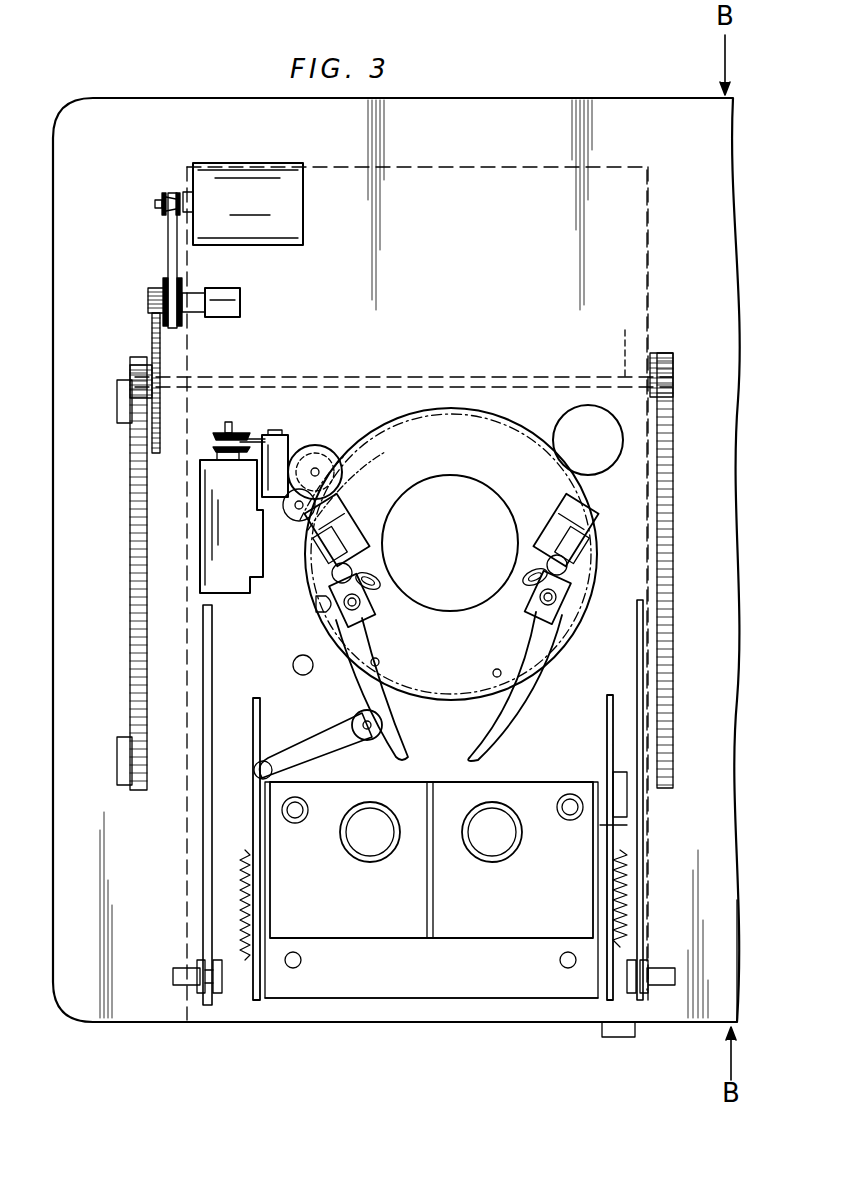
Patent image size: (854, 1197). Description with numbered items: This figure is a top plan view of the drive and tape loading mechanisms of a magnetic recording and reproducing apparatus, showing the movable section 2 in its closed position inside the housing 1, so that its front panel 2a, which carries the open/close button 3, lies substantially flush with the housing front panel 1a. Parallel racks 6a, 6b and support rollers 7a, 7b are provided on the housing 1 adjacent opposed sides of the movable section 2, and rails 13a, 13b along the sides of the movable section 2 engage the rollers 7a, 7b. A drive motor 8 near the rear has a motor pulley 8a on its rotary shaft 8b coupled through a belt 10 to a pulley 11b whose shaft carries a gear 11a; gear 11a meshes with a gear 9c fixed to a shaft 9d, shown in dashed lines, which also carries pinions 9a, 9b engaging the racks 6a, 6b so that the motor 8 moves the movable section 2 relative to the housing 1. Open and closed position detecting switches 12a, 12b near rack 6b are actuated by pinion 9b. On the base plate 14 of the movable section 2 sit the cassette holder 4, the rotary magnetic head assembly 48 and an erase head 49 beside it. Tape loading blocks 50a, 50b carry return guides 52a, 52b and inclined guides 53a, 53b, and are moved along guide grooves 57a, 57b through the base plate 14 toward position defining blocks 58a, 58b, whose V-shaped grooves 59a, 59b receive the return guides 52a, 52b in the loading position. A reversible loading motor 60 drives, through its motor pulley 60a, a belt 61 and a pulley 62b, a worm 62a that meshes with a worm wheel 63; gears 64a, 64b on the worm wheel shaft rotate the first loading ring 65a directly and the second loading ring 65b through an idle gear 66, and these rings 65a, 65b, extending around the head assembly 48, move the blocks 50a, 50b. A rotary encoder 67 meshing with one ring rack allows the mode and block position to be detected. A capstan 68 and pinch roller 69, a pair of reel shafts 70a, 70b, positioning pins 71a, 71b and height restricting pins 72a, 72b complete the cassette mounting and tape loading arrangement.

The housing 1 is at (138, 1025).
The front panel 1a is at (700, 1025).
The movable section 2 is at (355, 1015).
The front panel 2a is at (485, 1025).
The open/close button 3 is at (620, 1037).
The cassette holder 4 is at (433, 940).
The rack 6a is at (675, 608).
The rack 6b is at (128, 540).
The roller 7a is at (660, 968).
The roller 7b is at (185, 963).
The drive motor 8 is at (272, 165).
The motor pulley 8a is at (160, 203).
The rotary shaft 8b is at (153, 204).
The pinion 9a is at (675, 368).
The pinion 9b is at (128, 372).
The gear 9c is at (150, 337).
The shaft 9d is at (625, 330).
The belt 10 is at (167, 248).
The gear 11a is at (146, 303).
The pulley 11b is at (162, 290).
The open position detecting switch 12a is at (115, 760).
The closed position detecting switch 12b is at (115, 410).
The rail 13a is at (645, 815).
The rail 13b is at (202, 820).
The base plate 14 is at (640, 552).
The rotary magnetic head assembly 48 is at (452, 477).
The erase head 49 is at (312, 605).
The tape loading block 50a is at (522, 612).
The tape loading block 50b is at (371, 667).
The return guide 52a is at (535, 572).
The return guide 52b is at (348, 555).
The inclined guide 53a is at (523, 580).
The inclined guide 53b is at (380, 583).
The guide groove 57a is at (492, 674).
The guide groove 57b is at (380, 661).
The position defining block 58a is at (590, 530).
The position defining block 58b is at (348, 521).
The groove 59a is at (556, 553).
The groove 59b is at (350, 567).
The loading motor 60 is at (198, 527).
The motor pulley 60a is at (222, 440).
The belt 61 is at (232, 430).
The worm 62a is at (305, 455).
The pulley 62b is at (276, 433).
The worm wheel 63 is at (300, 440).
The gear 64a is at (345, 455).
The gear 64b is at (358, 468).
The first loading ring 65a is at (470, 410).
The second loading ring 65b is at (502, 415).
The idle gear 66 is at (291, 519).
The rotary encoder 67 is at (590, 415).
The capstan 68 is at (292, 665).
The pinch roller 69 is at (358, 715).
The reel shaft 70a is at (492, 862).
The reel shaft 70b is at (375, 862).
The positioning pin 71a is at (570, 820).
The positioning pin 71b is at (297, 823).
The height restricting pin 72a is at (560, 960).
The height restricting pin 72b is at (302, 960).